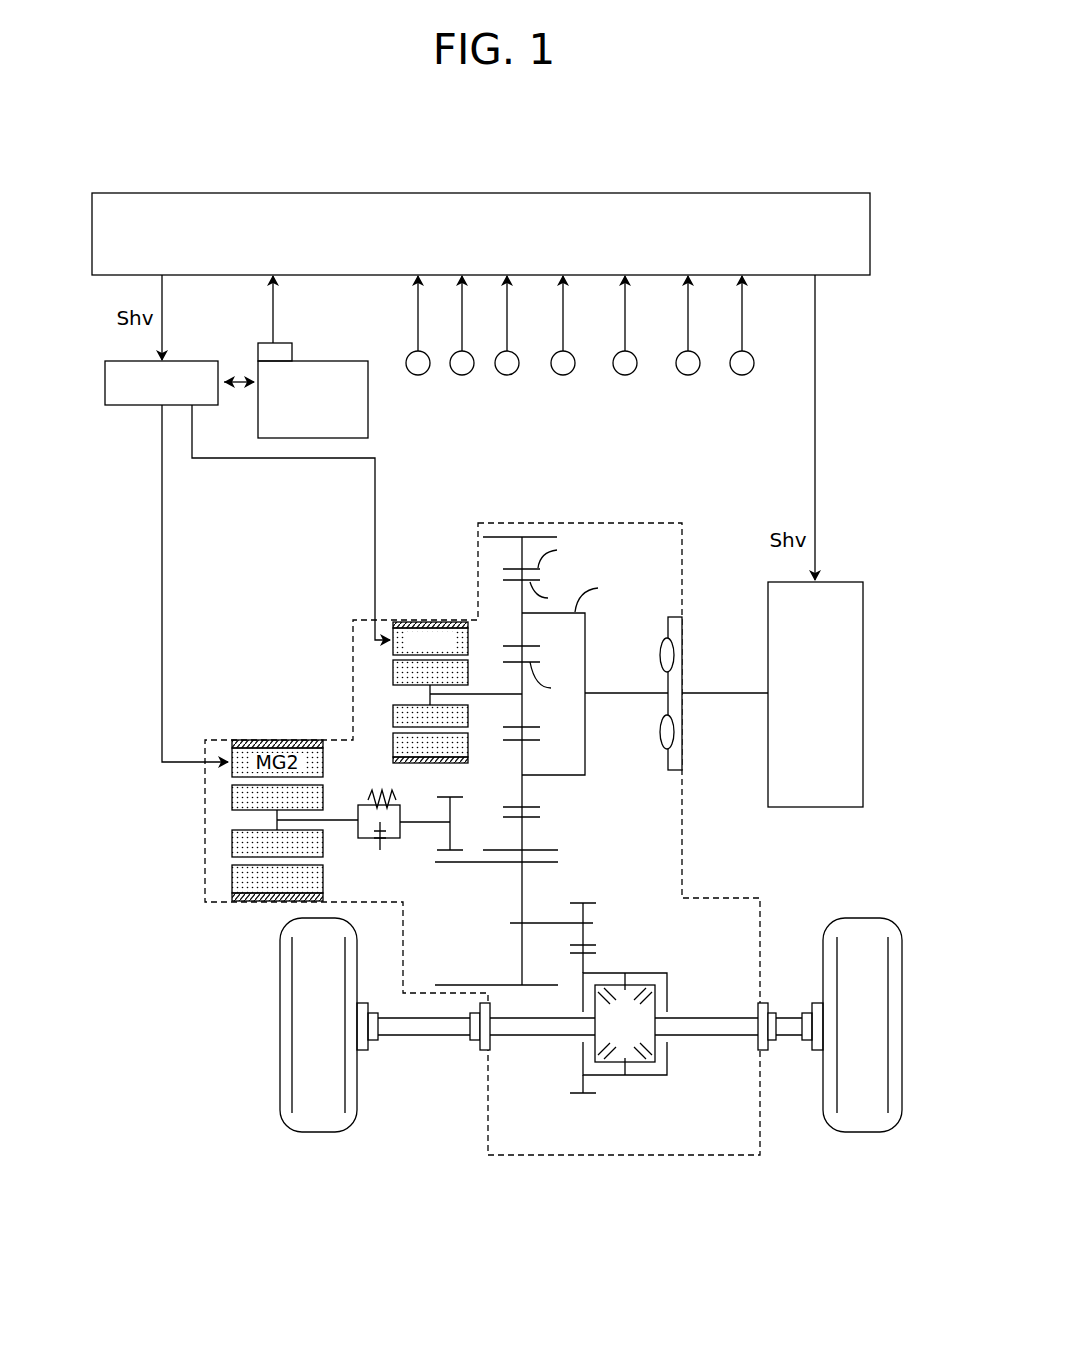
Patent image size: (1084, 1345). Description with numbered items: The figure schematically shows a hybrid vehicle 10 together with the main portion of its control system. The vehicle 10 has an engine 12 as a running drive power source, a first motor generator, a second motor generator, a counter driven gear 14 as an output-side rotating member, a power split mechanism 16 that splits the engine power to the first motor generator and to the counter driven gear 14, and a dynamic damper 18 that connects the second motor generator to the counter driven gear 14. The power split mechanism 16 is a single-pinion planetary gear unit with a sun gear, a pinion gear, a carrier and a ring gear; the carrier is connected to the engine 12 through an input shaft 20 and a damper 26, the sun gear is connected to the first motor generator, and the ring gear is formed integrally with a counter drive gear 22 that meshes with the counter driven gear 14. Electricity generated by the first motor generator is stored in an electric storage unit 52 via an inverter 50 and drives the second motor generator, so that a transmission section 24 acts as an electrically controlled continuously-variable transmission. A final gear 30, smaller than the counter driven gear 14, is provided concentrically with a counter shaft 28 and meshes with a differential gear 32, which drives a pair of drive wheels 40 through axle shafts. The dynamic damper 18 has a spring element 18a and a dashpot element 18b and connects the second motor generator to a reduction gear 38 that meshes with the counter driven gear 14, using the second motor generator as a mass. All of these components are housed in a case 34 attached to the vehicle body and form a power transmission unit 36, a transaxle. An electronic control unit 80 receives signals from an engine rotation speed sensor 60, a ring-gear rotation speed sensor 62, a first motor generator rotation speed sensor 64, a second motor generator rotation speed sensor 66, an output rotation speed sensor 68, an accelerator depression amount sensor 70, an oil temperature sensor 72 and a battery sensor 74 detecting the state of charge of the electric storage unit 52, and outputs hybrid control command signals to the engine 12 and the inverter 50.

The hybrid vehicle 10 is at (722, 148).
The engine 12 is at (812, 800).
The counter driven gear 14 is at (538, 863).
The power split mechanism 16 is at (557, 722).
The dynamic damper 18 is at (388, 817).
The spring element 18a is at (388, 798).
The dashpot element 18b is at (381, 850).
The input shaft 20 is at (615, 698).
The counter drive gear 22 is at (536, 537).
The transmission section 24 is at (452, 498).
The damper 26 is at (672, 772).
The counter shaft 28 is at (527, 923).
The final gear 30 is at (592, 945).
The differential gear 32 is at (660, 1085).
The case 34 is at (668, 521).
The power transmission unit 36 is at (587, 1082).
The reduction gear 38 is at (455, 850).
The drive wheels 40 is at (320, 1130).
The inverter 50 is at (135, 406).
The electric storage unit 52 is at (336, 361).
The engine rotation speed sensor 60 is at (418, 375).
The ring-gear rotation speed sensor 62 is at (462, 375).
The first MG1 rotation speed sensor 64 is at (507, 375).
The second MG2 rotation speed sensor 66 is at (563, 375).
The output rotation speed sensor 68 is at (625, 375).
The accelerator depression amount sensor 70 is at (688, 375).
The oil temperature sensor 72 is at (742, 375).
The battery sensor 74 is at (262, 343).
The electronic control unit 80 is at (813, 193).